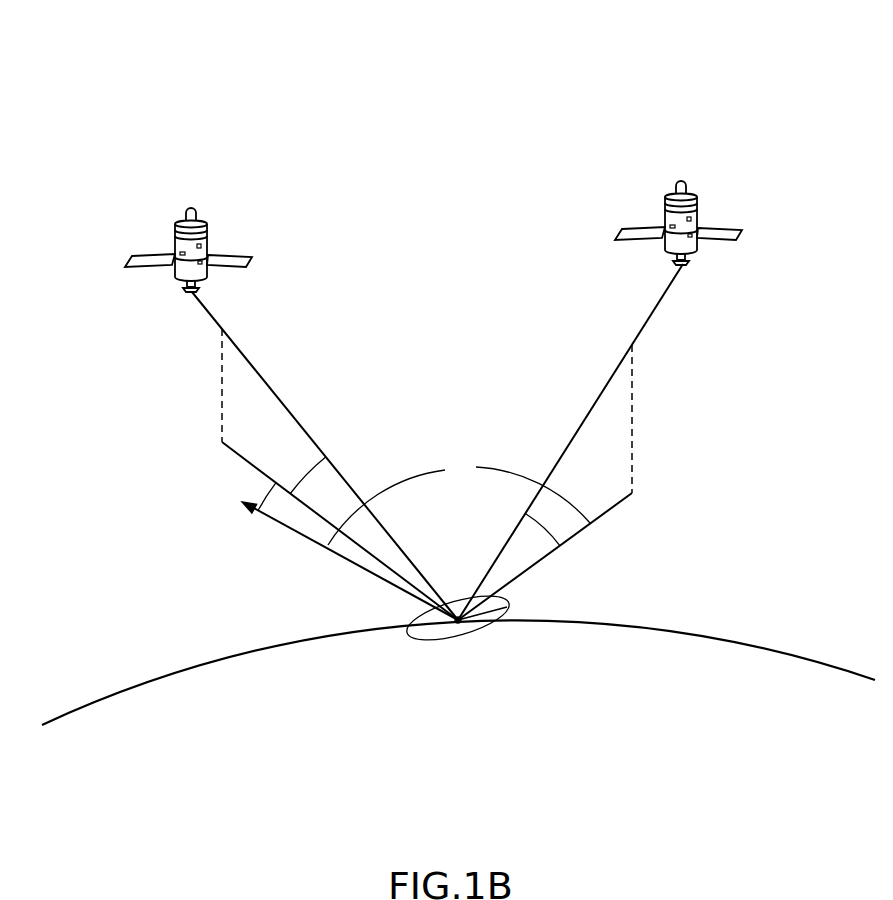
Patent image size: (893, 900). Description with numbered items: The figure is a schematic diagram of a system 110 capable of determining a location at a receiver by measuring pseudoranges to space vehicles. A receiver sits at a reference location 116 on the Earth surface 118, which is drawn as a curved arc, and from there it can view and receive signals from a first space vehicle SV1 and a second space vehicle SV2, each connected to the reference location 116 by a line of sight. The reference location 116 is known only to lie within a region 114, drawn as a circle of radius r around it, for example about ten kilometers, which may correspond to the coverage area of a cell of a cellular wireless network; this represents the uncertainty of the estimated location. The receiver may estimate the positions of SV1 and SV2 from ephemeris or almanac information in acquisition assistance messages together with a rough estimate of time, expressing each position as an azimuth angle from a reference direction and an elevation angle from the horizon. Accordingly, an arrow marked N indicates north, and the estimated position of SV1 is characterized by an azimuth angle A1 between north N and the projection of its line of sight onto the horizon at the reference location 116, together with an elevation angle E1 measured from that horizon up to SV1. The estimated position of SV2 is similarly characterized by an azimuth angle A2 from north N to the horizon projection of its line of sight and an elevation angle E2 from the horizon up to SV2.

The satellite positioning geometry / system 110 is at (737, 93).
The region 114 is at (487, 633).
The reference location 116 is at (453, 630).
The Earth surface 118 is at (682, 637).
The first space vehicle SV1 is at (207, 241).
The second space vehicle SV2 is at (695, 247).
The north N is at (341, 553).
The estimated azimuth angle A1 is at (276, 499).
The estimated azimuth angle A2 is at (459, 502).
The estimated elevation angle E1 is at (323, 468).
The estimated elevation angle E2 is at (528, 515).
The radius r is at (489, 605).